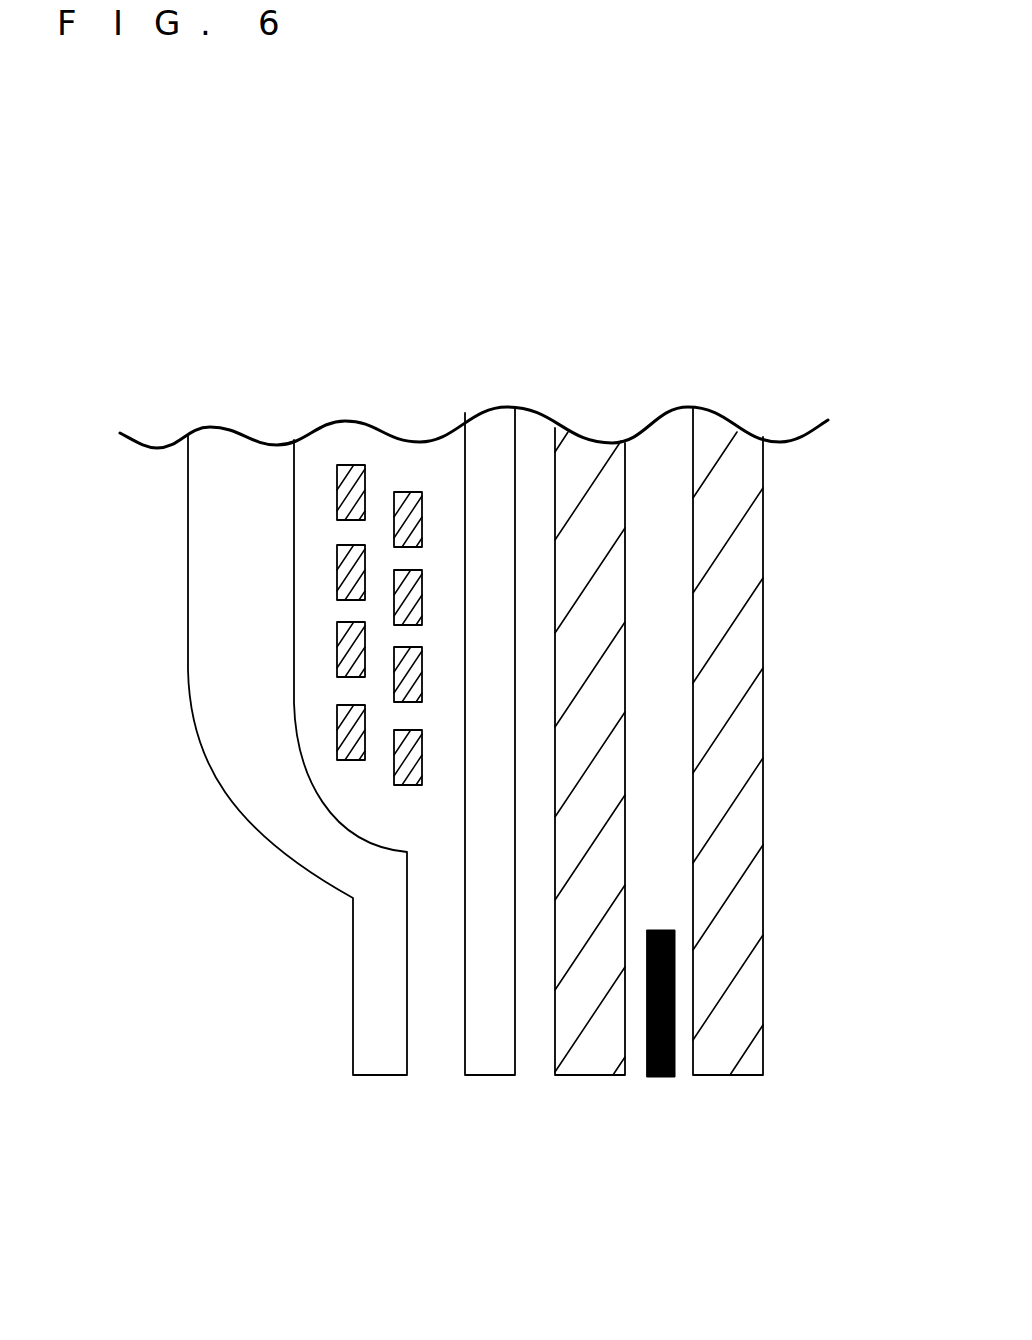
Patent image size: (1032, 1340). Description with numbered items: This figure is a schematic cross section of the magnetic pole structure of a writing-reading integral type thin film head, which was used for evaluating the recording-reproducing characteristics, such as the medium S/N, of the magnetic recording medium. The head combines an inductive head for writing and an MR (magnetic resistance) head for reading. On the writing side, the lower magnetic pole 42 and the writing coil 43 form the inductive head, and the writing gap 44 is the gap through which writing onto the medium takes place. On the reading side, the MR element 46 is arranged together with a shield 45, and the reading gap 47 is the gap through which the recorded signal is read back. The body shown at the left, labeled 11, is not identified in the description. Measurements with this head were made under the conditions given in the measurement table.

The housing body 11 is at (233, 655).
The lower magnetic pole 42 is at (485, 447).
The writing coil 43 is at (403, 470).
The writing gap 44 is at (438, 1073).
The shield 45 is at (603, 578).
The MR element 46 is at (683, 1080).
The reading gap 47 is at (655, 1080).